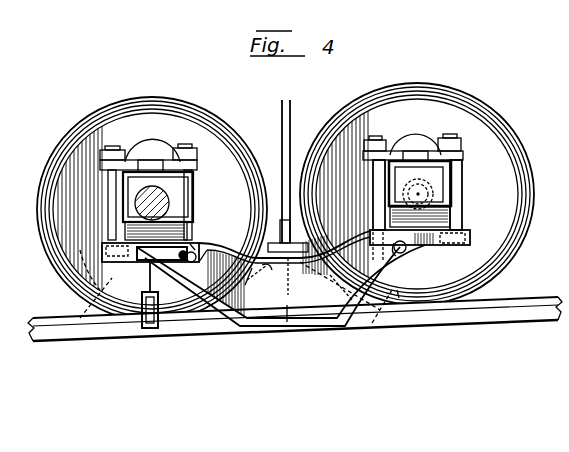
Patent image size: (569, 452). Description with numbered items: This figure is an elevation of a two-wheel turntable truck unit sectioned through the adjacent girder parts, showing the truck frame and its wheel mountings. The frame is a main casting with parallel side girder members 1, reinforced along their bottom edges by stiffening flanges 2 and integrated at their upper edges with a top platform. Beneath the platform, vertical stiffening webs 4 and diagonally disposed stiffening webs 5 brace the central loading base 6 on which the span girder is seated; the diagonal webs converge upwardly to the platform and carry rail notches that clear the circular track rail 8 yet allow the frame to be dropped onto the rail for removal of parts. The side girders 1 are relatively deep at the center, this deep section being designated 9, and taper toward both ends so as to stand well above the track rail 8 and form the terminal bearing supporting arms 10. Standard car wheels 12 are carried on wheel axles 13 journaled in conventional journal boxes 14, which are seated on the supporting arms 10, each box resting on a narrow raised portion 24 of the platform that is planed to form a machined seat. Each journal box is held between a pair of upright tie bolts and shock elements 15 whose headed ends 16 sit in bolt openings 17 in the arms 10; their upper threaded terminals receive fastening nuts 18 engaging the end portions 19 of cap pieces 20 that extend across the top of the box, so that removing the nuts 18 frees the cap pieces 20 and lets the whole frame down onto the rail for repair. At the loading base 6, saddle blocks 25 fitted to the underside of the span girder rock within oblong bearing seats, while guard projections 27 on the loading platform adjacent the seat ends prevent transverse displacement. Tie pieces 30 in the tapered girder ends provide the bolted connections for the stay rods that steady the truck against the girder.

The side girder member 1 is at (252, 289).
The stiffening flange 2 is at (245, 320).
The vertical stiffening web 4 is at (298, 276).
The diagonal stiffening web 5 is at (299, 288).
The loading base 6 is at (269, 279).
The track rail 8 is at (62, 318).
The central deep section 9 is at (287, 322).
The bearing supporting arm 10 is at (160, 257).
The wheel 12 is at (72, 128).
The wheel axle 13 is at (170, 202).
The journal box 14 is at (196, 180).
The tie bolt and shock element 15 is at (108, 204).
The headed end 16 is at (100, 252).
The bolt opening 17 is at (87, 312).
The fastening nut 18 is at (190, 150).
The end portion of cap piece 19 is at (105, 170).
The cap piece 20 is at (152, 157).
The raised portion 24 is at (196, 245).
The saddle block 25 is at (272, 245).
The guard projection 27 is at (240, 260).
The tie piece 30 is at (191, 262).